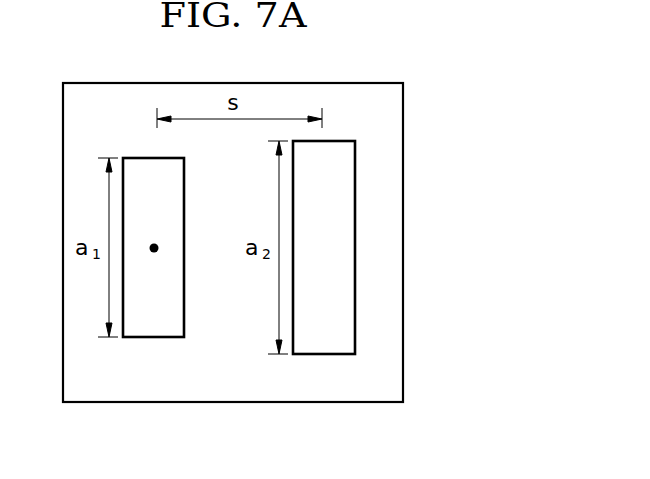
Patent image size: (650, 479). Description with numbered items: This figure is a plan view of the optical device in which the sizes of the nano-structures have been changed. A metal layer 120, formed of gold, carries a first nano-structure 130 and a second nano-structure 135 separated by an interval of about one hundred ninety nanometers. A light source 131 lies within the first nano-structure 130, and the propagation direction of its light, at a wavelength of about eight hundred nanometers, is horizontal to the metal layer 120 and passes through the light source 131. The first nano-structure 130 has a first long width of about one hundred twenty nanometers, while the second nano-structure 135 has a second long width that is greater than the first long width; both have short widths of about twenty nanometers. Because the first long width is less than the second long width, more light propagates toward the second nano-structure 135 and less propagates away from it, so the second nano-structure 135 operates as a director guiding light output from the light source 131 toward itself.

The metal layer 120 is at (400, 249).
The first nano-structure 130 is at (155, 338).
The light source 131 is at (154, 252).
The second nano-structure 135 is at (323, 355).